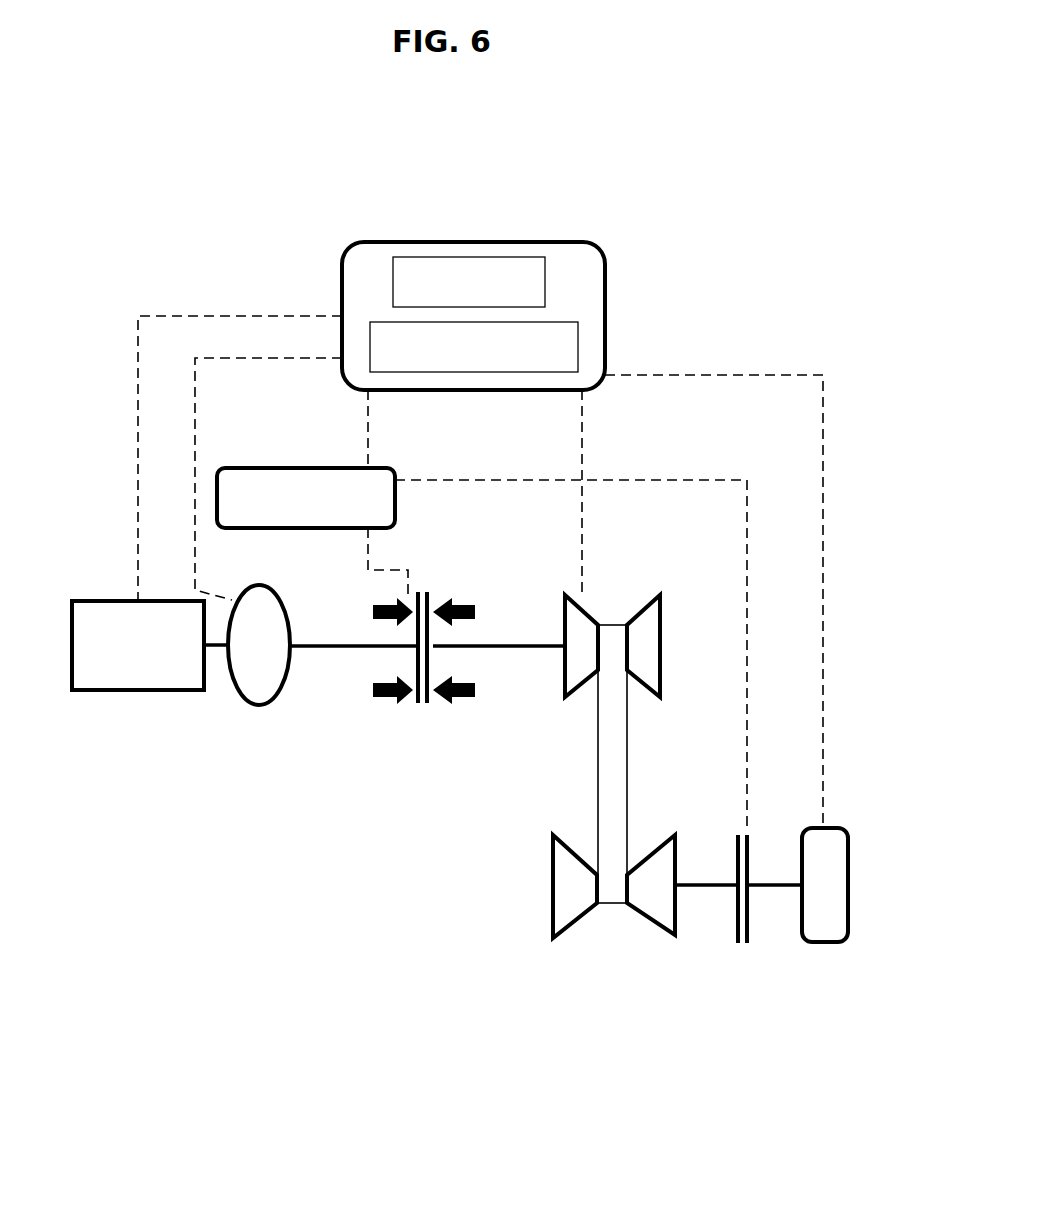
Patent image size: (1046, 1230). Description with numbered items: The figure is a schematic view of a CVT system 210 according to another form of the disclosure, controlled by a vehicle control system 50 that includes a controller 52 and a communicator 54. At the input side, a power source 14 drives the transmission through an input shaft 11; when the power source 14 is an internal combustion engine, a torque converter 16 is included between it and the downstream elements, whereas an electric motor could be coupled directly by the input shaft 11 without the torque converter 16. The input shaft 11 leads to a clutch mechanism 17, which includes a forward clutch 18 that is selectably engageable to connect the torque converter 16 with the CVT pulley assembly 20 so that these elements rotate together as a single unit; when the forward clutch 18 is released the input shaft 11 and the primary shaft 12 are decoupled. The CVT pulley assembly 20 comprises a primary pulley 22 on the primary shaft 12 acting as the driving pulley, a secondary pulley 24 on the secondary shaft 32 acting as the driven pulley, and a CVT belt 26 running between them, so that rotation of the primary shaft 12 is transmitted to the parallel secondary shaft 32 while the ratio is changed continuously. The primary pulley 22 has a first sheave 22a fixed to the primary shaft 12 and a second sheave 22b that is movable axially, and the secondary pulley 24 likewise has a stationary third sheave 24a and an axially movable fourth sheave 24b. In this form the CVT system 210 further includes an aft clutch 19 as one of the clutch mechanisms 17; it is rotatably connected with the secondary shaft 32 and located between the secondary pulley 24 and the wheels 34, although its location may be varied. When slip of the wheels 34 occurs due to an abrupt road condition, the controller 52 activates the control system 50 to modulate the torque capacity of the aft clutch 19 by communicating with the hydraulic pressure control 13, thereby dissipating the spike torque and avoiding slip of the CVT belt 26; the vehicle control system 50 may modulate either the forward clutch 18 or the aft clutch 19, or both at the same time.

The CVT system 210 is at (598, 126).
The vehicle control system 50 is at (607, 273).
The controller 52 is at (414, 262).
The communicator 54 is at (568, 352).
The hydraulic pressure control 13 is at (331, 481).
The power source 14 is at (117, 612).
The torque converter 16 is at (243, 685).
The input shaft 11 is at (330, 648).
The forward clutch 18 is at (410, 705).
The clutch mechanism 17 is at (420, 546).
The primary shaft 12 is at (500, 648).
The CVT pulley assembly 20 is at (567, 765).
The primary pulley 22 is at (600, 628).
The first sheave 22a is at (565, 665).
The second sheave 22b is at (635, 630).
The CVT belt 26 is at (625, 762).
The secondary pulley 24 is at (581, 929).
The third sheave 24a is at (562, 888).
The fourth sheave 24b is at (660, 935).
The secondary shaft 32 is at (765, 883).
The aft clutch 19 is at (747, 911).
The wheels 34 is at (838, 850).